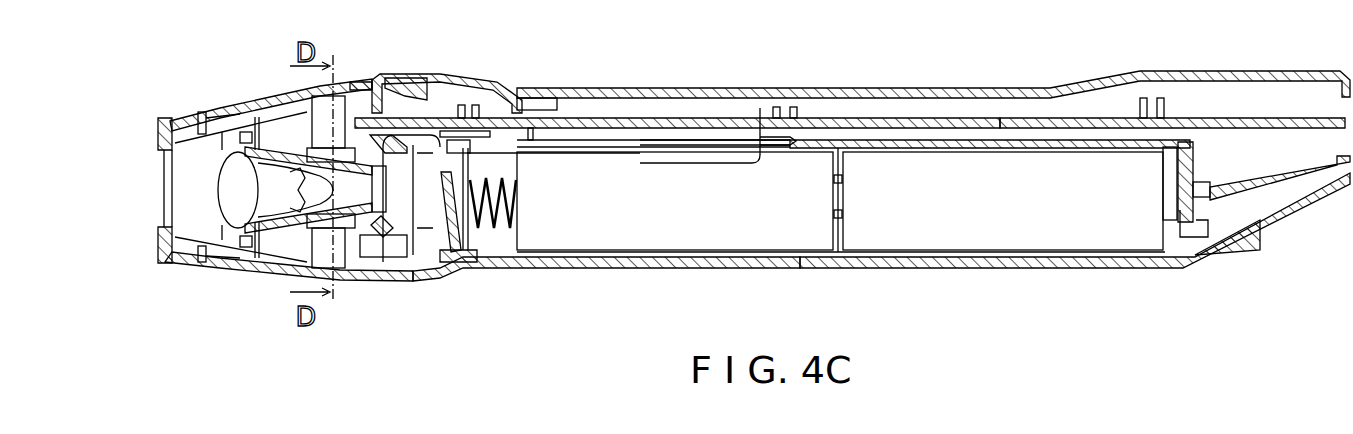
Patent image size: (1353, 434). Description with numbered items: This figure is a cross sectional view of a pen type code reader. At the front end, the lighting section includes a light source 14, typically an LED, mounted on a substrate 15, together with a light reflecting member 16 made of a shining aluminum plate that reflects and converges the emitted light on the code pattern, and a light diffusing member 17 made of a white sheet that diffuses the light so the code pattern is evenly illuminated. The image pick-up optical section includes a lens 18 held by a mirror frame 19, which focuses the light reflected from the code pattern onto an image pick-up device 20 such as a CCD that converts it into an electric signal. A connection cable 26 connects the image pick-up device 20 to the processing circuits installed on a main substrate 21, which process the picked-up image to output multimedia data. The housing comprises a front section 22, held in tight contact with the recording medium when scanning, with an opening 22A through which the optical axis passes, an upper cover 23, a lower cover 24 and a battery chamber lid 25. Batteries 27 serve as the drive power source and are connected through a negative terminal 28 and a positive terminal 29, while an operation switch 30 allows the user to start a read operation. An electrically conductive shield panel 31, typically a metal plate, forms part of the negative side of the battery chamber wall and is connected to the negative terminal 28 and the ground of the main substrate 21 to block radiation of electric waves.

The light source 14 is at (236, 234).
The substrate 15 is at (252, 130).
The light reflecting member 16 is at (240, 120).
The light diffusing member 17 is at (242, 238).
The lens 18 is at (262, 172).
The mirror frame 19 is at (395, 228).
The image pick-up device 20 is at (440, 233).
The main substrate 21 is at (1018, 118).
The front section 22 is at (170, 118).
The opening 22A is at (164, 212).
The upper cover 23 is at (598, 118).
The lower cover 24 is at (662, 268).
The battery chamber lid 25 is at (1000, 268).
The connection cable 26 is at (438, 112).
The batteries 27 is at (770, 235).
The negative terminal 28 is at (495, 217).
The positive terminal 29 is at (1172, 238).
The operation switch 30 is at (473, 78).
The electrically conductive shield panel 31 is at (737, 125).